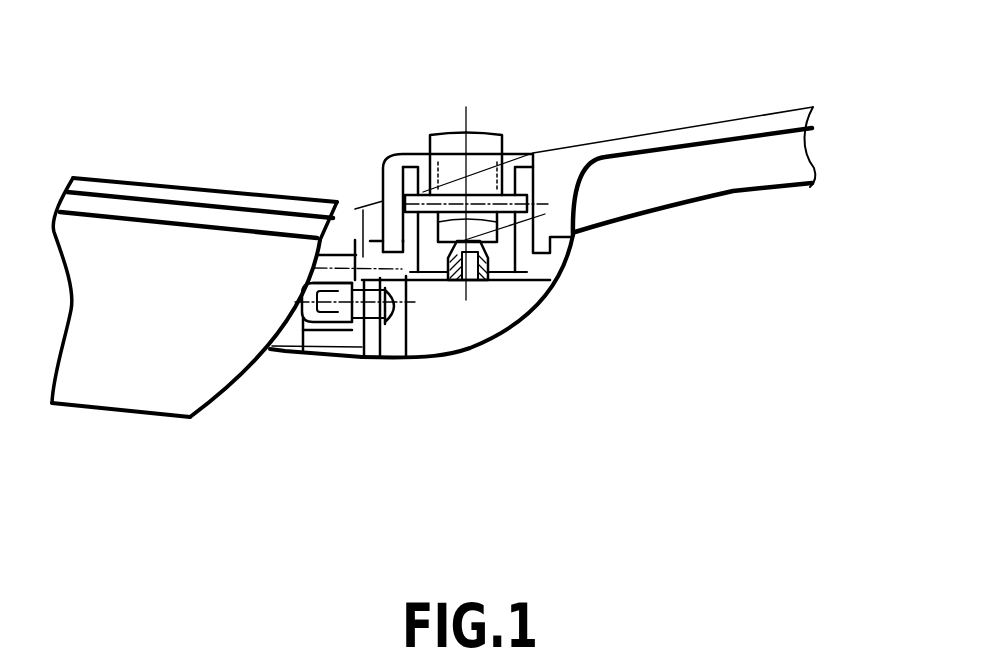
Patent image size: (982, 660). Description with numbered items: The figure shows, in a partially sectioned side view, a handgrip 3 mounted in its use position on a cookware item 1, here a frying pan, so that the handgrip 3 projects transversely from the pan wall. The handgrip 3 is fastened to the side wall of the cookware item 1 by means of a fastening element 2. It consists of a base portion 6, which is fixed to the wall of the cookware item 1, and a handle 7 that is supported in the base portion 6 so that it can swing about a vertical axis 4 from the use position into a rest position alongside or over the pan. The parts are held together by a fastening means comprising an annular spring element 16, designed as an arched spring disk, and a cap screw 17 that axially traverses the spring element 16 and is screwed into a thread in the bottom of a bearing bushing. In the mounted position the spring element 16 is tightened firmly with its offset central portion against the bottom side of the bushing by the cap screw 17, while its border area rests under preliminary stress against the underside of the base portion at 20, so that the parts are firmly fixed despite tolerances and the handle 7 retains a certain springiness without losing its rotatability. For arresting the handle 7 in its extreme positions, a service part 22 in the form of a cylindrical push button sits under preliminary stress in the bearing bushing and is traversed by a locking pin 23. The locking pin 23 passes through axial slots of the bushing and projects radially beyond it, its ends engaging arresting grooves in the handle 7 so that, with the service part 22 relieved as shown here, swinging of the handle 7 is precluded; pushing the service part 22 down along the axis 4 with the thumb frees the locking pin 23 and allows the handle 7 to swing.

The cookware item 1 is at (147, 353).
The fastening element 2 is at (302, 368).
The handgrip 3 is at (603, 110).
The vertical axis 4 is at (466, 155).
The base portion 6 is at (552, 262).
The handle 7 is at (748, 153).
The spring element 16 is at (443, 282).
The cap screw 17 is at (468, 283).
The underside of the base portion 20 is at (528, 283).
The service part 22 is at (428, 137).
The locking pin 23 is at (418, 200).